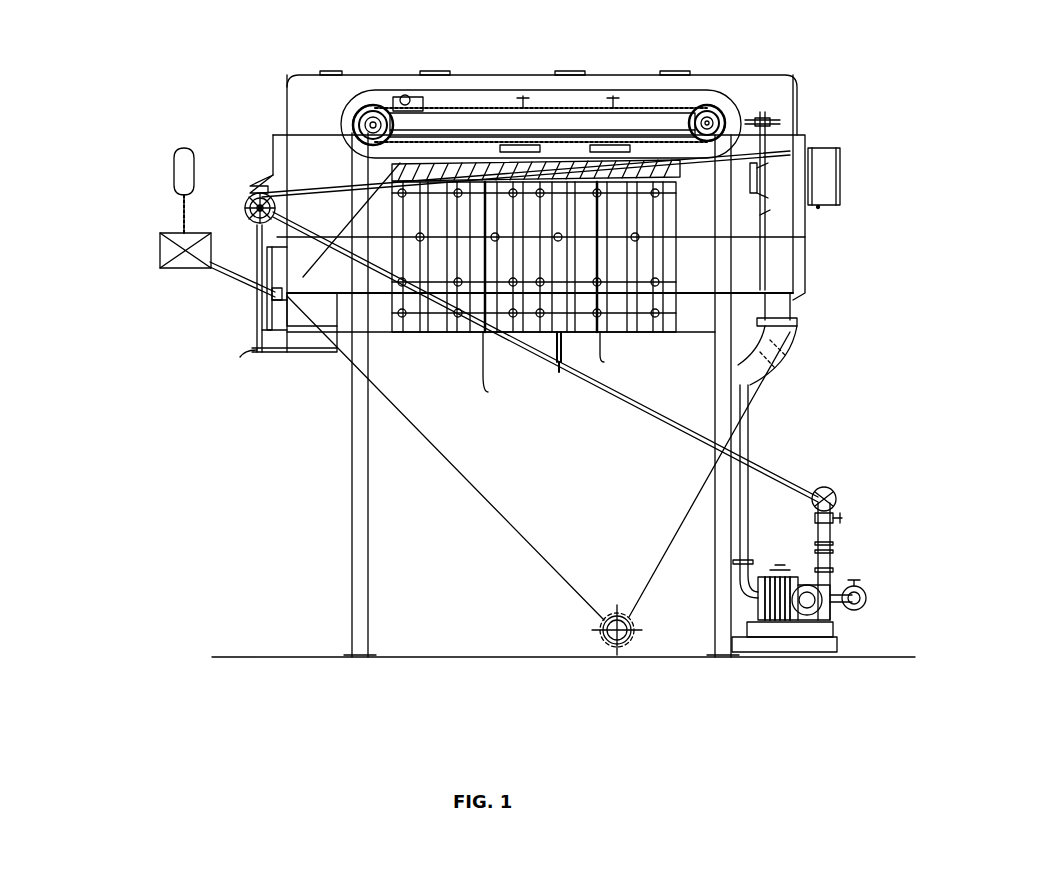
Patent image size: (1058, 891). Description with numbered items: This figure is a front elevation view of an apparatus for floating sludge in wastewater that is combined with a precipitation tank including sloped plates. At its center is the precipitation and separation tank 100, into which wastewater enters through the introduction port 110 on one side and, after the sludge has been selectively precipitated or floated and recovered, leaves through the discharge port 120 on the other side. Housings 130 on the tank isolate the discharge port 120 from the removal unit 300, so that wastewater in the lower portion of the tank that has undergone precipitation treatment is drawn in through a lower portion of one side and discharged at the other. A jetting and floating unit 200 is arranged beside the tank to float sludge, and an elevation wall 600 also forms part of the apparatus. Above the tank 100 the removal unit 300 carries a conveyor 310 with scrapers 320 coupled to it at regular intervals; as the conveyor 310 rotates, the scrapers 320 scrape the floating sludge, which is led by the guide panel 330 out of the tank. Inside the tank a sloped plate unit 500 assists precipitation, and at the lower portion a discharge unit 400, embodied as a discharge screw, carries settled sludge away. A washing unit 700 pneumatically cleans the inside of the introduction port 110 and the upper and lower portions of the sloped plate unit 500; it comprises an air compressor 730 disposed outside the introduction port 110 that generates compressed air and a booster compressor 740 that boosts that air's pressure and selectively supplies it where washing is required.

The precipitation and separation tank 100 is at (400, 424).
The introduction port 110 is at (246, 356).
The discharge port 120 is at (780, 312).
The housings 130 is at (800, 135).
The jetting and floating unit 200 is at (865, 545).
The removal unit 300 is at (473, 80).
The conveyor 310 is at (463, 103).
The scraper 320 is at (613, 103).
The guide panel 330 is at (350, 157).
The discharge unit 400 is at (586, 646).
The sloped plate unit 500 is at (678, 345).
The elevation wall 600 is at (785, 113).
The washing unit 700 is at (133, 176).
The air compressor 730 is at (185, 147).
The booster compressor 740 is at (168, 233).